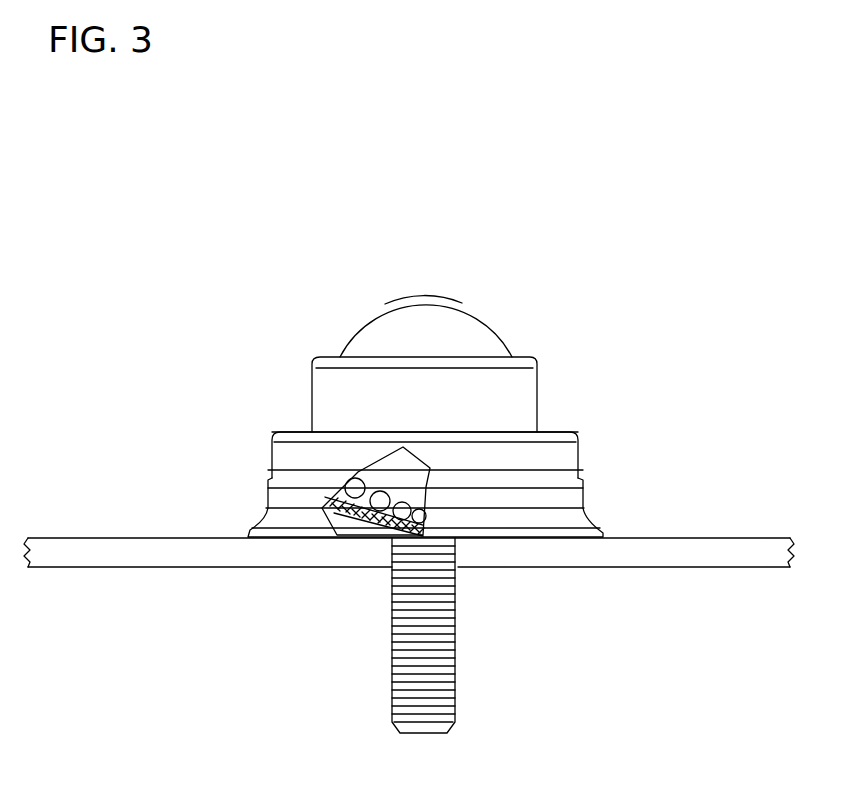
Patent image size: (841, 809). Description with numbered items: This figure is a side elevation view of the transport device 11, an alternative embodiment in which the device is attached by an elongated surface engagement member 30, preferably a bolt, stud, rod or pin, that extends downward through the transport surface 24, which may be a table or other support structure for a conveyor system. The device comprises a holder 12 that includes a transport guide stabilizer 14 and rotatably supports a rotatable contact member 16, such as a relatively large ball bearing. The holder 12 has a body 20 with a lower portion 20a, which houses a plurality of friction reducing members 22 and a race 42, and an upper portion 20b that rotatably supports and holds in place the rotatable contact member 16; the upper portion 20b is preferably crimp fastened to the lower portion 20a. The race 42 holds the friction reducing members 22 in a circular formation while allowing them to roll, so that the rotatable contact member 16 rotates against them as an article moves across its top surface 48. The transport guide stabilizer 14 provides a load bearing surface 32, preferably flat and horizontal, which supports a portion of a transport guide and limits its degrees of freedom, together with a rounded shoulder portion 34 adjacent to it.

The transport device 11 is at (614, 182).
The holder 12 is at (140, 350).
The transport guide stabilizer 14 is at (290, 432).
The rotatable contact member 16 is at (455, 308).
The body 20 is at (204, 468).
The lower portion 20a is at (143, 472).
The upper portion 20b is at (146, 355).
The friction reducing members 22 is at (398, 528).
The transport surface 24 is at (80, 568).
The elongated surface engagement member 30 is at (456, 634).
The load bearing surface 32 is at (301, 428).
The rounded shoulder portion 34 is at (264, 432).
The race 42 is at (322, 508).
The top surface 48 is at (415, 303).